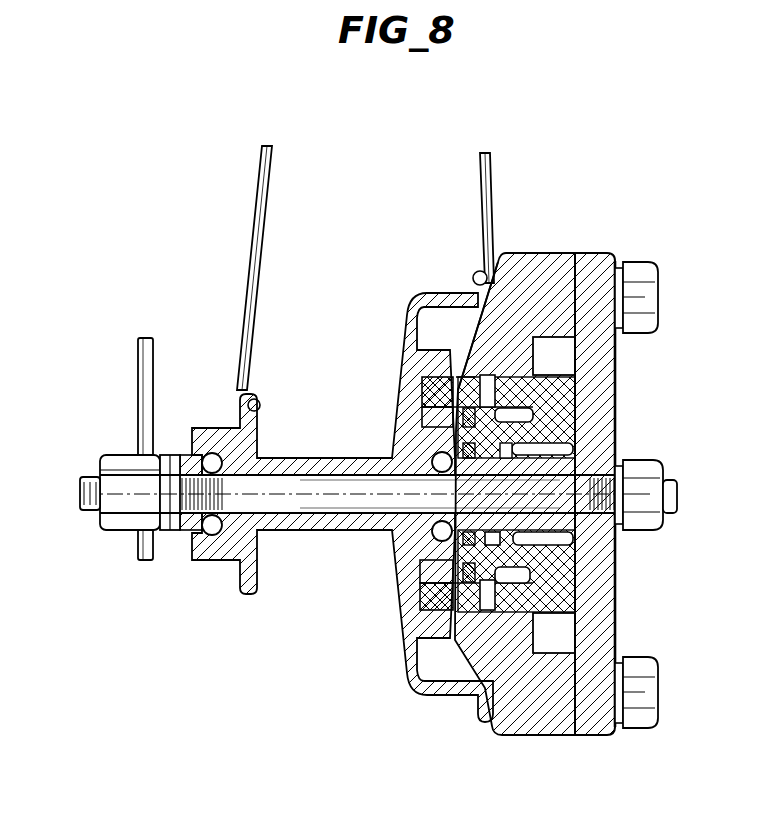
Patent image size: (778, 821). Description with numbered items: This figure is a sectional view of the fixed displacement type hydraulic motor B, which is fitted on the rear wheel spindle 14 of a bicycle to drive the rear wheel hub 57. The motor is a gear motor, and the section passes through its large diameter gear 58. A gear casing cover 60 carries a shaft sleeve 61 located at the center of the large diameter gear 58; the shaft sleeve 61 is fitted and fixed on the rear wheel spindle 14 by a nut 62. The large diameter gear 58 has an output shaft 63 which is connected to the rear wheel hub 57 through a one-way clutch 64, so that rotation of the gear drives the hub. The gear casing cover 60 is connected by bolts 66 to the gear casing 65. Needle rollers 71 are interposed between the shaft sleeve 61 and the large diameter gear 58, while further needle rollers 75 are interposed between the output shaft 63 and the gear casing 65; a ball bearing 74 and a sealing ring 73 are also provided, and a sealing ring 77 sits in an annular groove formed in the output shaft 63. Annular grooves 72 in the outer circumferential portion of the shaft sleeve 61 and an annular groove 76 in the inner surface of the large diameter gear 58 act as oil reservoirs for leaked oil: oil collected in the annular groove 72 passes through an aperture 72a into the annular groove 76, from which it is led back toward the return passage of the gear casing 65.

The rear wheel spindle 14 is at (302, 505).
The rear wheel hub 57 is at (322, 467).
The large diameter gear 58 is at (555, 647).
The gear casing cover 60 is at (615, 572).
The shaft sleeve 61 is at (575, 448).
The nut 62 is at (655, 463).
The output shaft 63 is at (428, 572).
The one-way clutch 64 is at (427, 392).
The gear casing 65 is at (532, 735).
The bolts 66 is at (643, 297).
The needle rollers 71 is at (573, 587).
The annular grooves 72 is at (500, 600).
The aperture 72a is at (575, 410).
The sealing ring 73 is at (412, 610).
The ball bearing 74 is at (433, 537).
The needle rollers 75 is at (575, 395).
The annular groove 76 is at (492, 375).
The sealing ring 77 is at (462, 375).
The hydraulic motor B is at (572, 232).